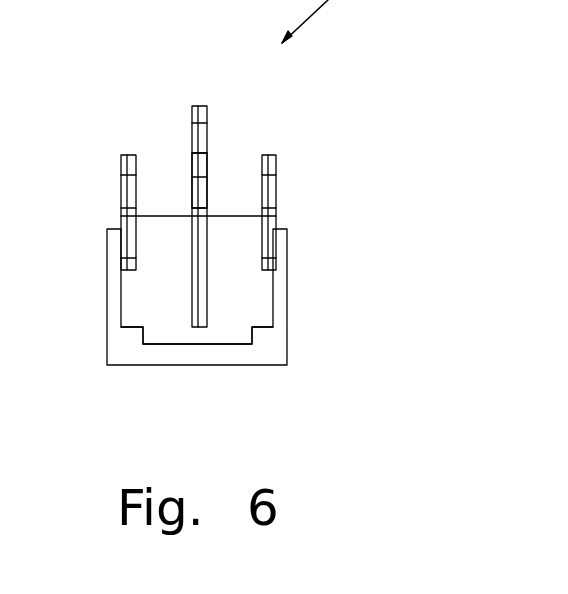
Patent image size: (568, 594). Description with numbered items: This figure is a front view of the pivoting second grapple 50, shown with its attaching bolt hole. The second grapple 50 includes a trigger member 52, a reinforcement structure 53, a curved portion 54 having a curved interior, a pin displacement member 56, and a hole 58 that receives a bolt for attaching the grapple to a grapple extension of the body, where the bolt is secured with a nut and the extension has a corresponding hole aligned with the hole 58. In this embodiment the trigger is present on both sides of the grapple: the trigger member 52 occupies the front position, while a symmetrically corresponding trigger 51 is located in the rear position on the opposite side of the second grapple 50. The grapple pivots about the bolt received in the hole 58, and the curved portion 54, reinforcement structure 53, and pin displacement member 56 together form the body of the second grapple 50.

The pivoting second grapple 50 is at (328, 0).
The trigger 51 is at (277, 192).
The trigger member 52 is at (120, 190).
The reinforcement structure 53 is at (178, 327).
The curved portion 54 is at (286, 305).
The pin displacement member 56 is at (188, 138).
The hole 58 is at (207, 187).